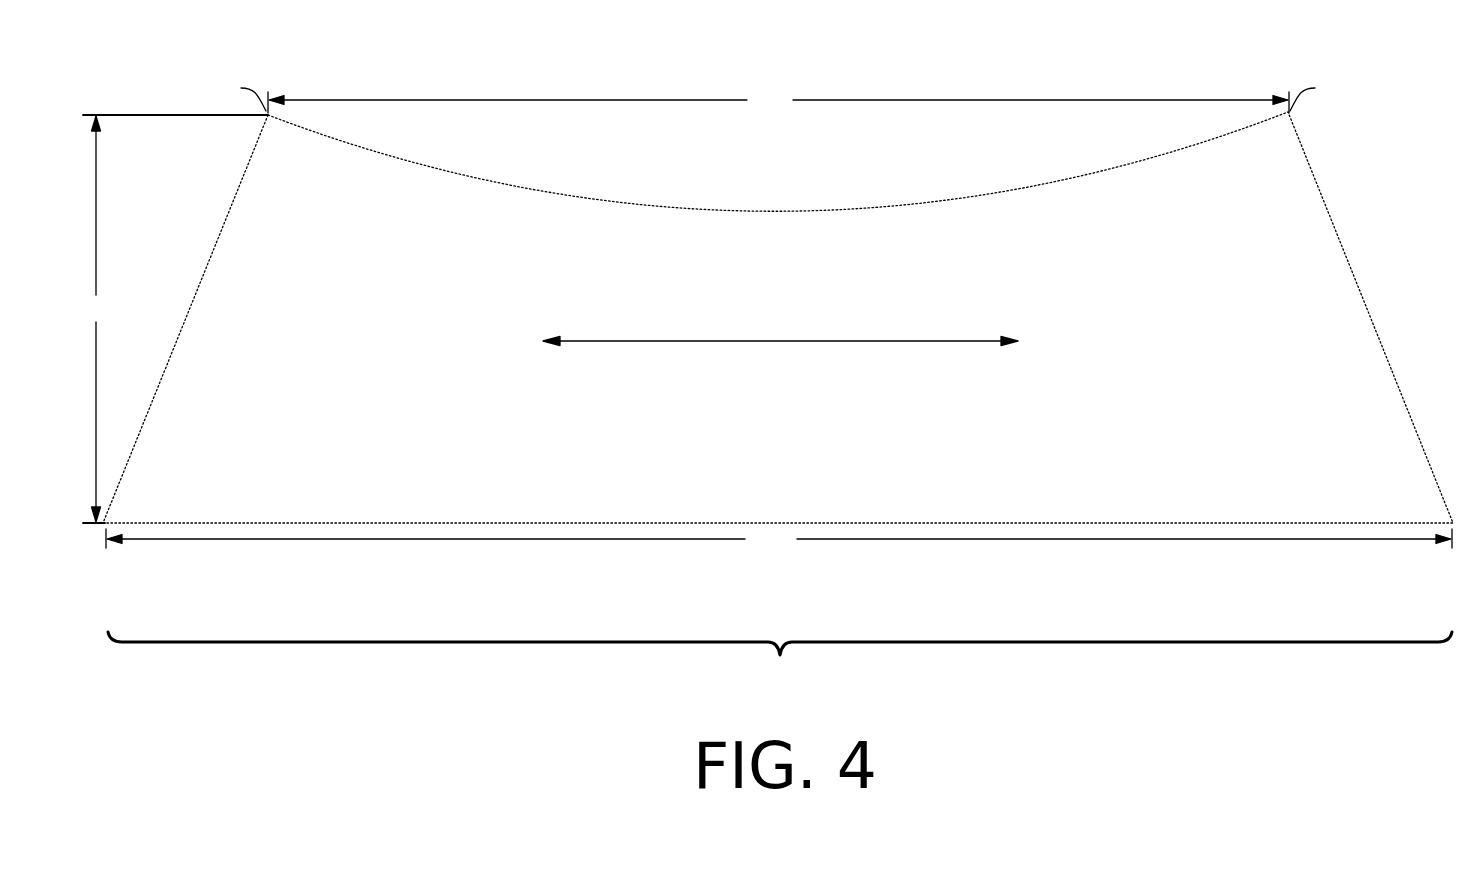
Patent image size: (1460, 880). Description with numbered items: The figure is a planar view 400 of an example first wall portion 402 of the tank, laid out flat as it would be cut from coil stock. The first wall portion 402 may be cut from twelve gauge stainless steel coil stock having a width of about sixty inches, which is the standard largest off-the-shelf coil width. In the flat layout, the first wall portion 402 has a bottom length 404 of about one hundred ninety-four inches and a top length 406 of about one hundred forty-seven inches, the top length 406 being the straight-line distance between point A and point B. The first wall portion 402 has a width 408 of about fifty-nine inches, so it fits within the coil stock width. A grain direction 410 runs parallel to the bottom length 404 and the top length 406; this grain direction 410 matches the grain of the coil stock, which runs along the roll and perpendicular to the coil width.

The planar view 400 is at (778, 377).
The first wall portion 402 is at (178, 53).
The bottom length 404 is at (779, 539).
The top length 406 is at (778, 101).
The width 408 is at (98, 319).
The grain direction 410 is at (775, 341).